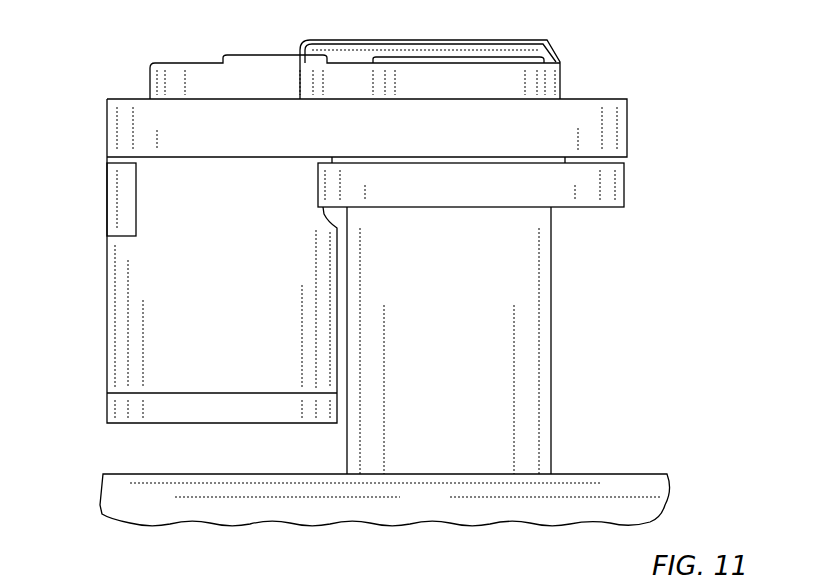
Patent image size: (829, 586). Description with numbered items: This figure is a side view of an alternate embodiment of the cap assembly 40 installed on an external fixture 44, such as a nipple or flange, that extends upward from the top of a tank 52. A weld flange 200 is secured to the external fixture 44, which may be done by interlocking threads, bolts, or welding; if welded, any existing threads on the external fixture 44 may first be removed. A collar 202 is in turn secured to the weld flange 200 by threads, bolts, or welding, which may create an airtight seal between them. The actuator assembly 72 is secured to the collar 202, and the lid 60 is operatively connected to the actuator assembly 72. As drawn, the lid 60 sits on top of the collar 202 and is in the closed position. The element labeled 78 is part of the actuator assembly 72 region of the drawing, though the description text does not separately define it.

The cap assembly 40 is at (688, 63).
The external fixture 44 is at (553, 338).
The tank 52 is at (607, 474).
The lid 60 is at (562, 73).
The actuator assembly 72 is at (184, 270).
The bracket body 78 is at (107, 311).
The weld flange 200 is at (624, 185).
The collar 202 is at (627, 120).